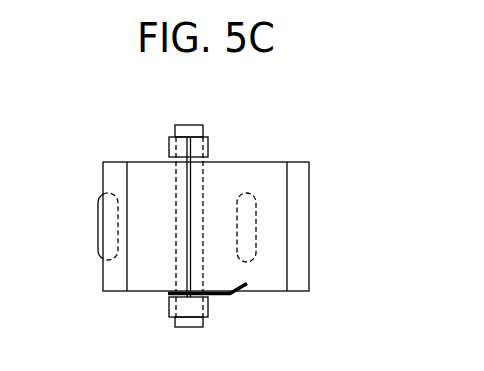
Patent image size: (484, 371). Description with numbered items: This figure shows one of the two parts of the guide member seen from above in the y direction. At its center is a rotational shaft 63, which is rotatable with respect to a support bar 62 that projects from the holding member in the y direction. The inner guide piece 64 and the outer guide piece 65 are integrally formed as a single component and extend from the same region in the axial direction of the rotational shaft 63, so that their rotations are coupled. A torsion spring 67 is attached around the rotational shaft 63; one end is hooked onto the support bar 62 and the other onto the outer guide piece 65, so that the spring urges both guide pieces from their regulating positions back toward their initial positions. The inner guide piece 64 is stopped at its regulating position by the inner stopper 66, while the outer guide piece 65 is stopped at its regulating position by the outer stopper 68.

The support bar 62 is at (168, 308).
The rotational shaft 63 is at (193, 320).
The inner guide piece 64 is at (138, 168).
The outer guide piece 65 is at (255, 170).
The inner stopper 66 is at (97, 230).
The torsion spring 67 is at (222, 295).
The outer stopper 68 is at (257, 228).